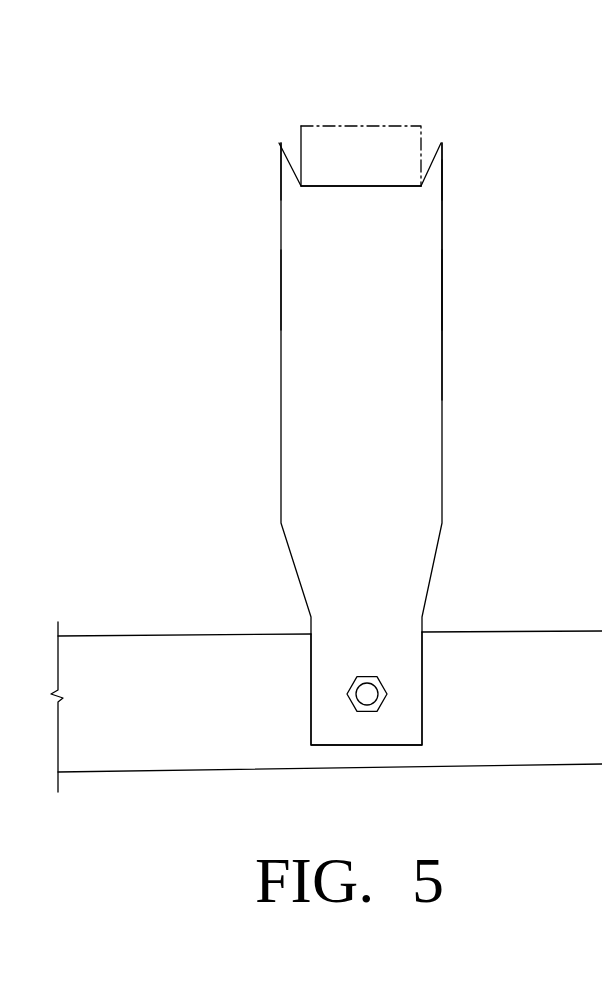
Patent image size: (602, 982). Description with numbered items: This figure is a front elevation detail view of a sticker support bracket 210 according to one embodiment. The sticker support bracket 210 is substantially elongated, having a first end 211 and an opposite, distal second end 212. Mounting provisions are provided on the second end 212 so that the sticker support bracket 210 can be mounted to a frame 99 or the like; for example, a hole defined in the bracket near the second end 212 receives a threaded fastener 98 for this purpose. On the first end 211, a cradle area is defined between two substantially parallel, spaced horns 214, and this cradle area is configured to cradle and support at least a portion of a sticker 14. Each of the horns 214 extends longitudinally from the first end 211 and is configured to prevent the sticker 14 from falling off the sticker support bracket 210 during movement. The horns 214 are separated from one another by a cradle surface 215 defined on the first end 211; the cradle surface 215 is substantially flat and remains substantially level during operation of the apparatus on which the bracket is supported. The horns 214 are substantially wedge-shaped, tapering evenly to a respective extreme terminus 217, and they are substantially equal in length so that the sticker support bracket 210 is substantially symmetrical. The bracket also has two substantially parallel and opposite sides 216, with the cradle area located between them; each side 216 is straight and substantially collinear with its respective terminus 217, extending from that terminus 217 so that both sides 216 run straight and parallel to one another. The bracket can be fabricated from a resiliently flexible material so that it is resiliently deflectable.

The sticker 14 is at (334, 126).
The threaded fastener 98 is at (367, 688).
The frame 99 is at (558, 638).
The sticker support bracket 210 is at (210, 362).
The first end 211 is at (442, 240).
The second end 212 is at (422, 730).
The horns 214 is at (281, 163).
The cradle surface 215 is at (362, 187).
The sides 216 is at (281, 290).
The terminus 217 is at (279, 143).